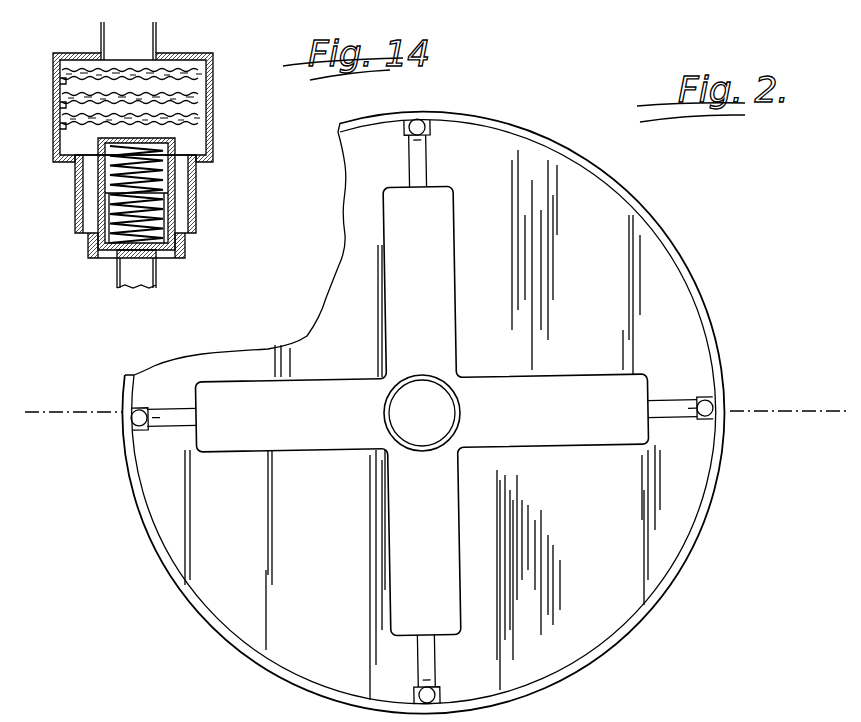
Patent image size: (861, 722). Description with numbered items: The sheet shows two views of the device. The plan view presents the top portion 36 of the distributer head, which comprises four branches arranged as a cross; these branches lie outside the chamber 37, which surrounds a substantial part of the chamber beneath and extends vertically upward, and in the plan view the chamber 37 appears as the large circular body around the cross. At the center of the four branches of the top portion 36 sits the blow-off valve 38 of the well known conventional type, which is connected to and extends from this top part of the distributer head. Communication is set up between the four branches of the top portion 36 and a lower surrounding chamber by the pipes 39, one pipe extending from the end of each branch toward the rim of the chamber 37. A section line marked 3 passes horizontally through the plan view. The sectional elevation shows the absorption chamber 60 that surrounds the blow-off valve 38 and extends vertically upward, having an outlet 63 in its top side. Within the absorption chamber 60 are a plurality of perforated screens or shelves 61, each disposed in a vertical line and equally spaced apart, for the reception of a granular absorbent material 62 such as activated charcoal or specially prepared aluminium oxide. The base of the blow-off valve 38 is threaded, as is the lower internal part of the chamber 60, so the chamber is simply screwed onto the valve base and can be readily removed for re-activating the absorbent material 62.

In FIG. 2, the section line 3- 3 is at (429, 409).
In FIG. 2, the upper section of distributer head 36 is at (590, 364).
In FIG. 2, the chamber 37 is at (620, 577).
In FIG. 2, the blow-off valve 38 is at (462, 405).
In FIG. 2, the pipes 39 is at (428, 157).
In FIG. 14, the absorption chamber 60 is at (198, 147).
In FIG. 14, the perforated screens or shelves 61 is at (200, 118).
In FIG. 14, the granular absorbent material 62 is at (170, 72).
In FIG. 14, the outlet 63 is at (120, 36).